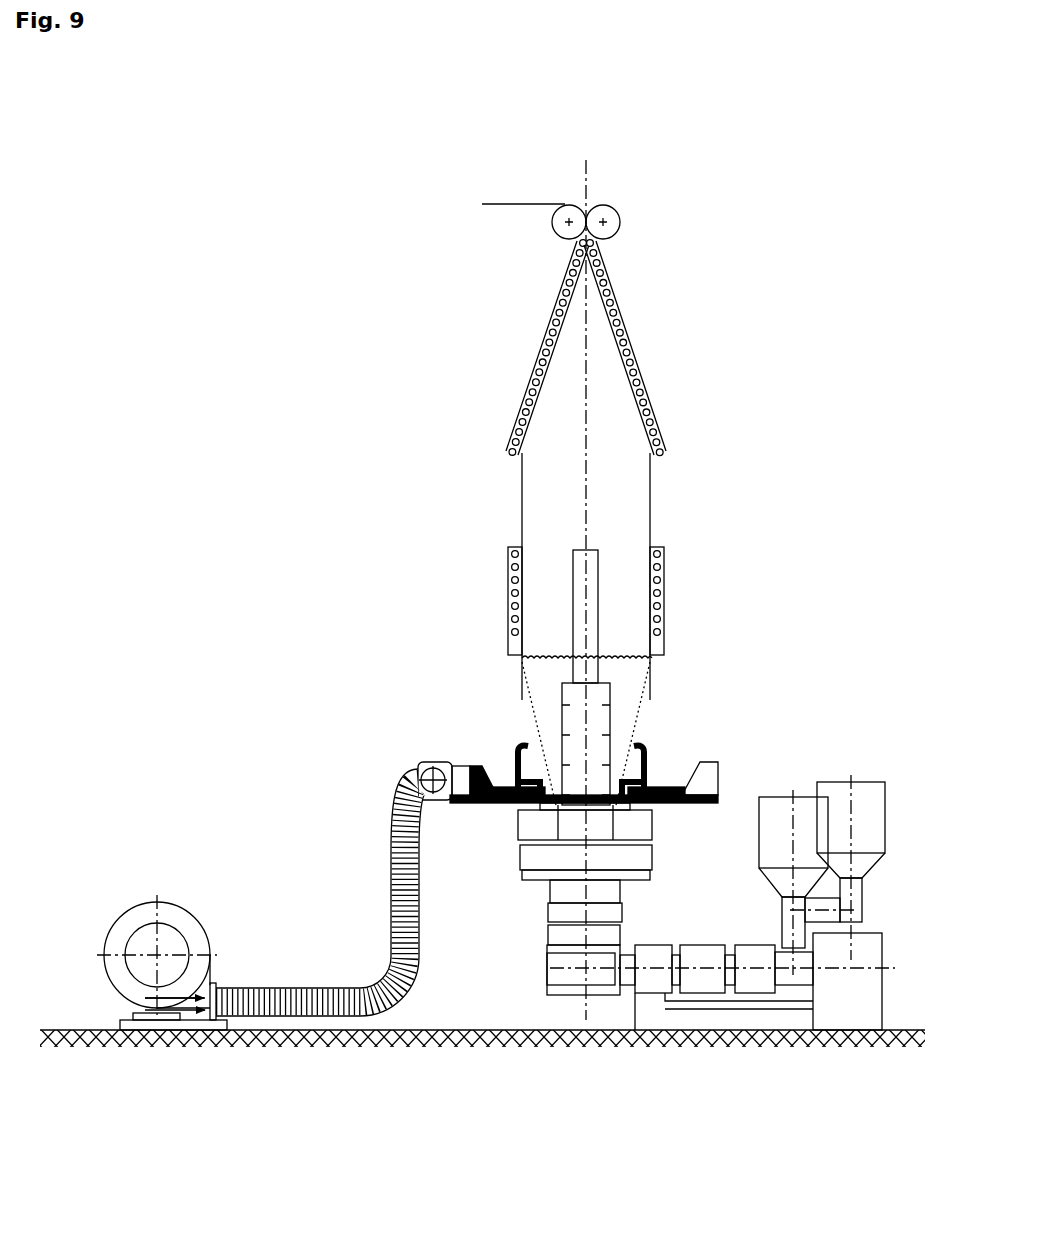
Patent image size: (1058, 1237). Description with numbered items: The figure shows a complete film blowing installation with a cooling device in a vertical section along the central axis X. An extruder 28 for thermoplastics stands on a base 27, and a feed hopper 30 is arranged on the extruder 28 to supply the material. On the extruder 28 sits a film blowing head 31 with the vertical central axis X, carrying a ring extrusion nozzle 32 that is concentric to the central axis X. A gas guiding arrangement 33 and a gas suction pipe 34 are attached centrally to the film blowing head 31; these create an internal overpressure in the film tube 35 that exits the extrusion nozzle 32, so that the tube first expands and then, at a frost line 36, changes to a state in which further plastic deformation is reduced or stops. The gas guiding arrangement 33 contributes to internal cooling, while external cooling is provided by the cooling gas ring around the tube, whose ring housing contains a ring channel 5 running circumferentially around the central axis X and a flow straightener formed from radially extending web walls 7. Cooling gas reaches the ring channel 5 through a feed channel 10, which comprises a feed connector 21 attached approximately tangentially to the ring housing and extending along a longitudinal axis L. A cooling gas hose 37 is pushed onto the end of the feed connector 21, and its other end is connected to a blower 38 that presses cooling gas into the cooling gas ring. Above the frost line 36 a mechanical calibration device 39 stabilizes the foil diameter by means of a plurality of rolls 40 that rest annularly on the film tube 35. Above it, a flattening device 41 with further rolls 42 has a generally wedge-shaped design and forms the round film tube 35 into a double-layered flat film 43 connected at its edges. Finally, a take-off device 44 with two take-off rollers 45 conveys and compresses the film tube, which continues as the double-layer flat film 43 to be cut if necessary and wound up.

The central axis X is at (590, 170).
The double-layered flat film 43 is at (520, 204).
The take-off device 44 is at (620, 199).
The take-off rollers 45 is at (621, 222).
The flattening device 41 is at (635, 355).
The rolls 42 is at (648, 395).
The film tube 35 is at (650, 490).
The mechanical calibration device 39 is at (508, 560).
The rolls 40 is at (508, 605).
The gas suction pipe 34 is at (598, 597).
The frost line 36 is at (632, 657).
The gas guiding arrangement 33 is at (612, 718).
The web walls 7 is at (722, 762).
The ring channel 5 is at (468, 762).
The feed connector 21 is at (428, 760).
The cooling gas hose 37 is at (387, 828).
The longitudinal axis L is at (445, 762).
The feed channel 10 is at (383, 792).
The film blowing head 31 is at (645, 820).
The ring extrusion nozzle 32 is at (548, 825).
The feed hopper 30 is at (808, 790).
The extruder 28 is at (675, 1020).
The base 27 is at (72, 1028).
The blower 38 is at (190, 905).